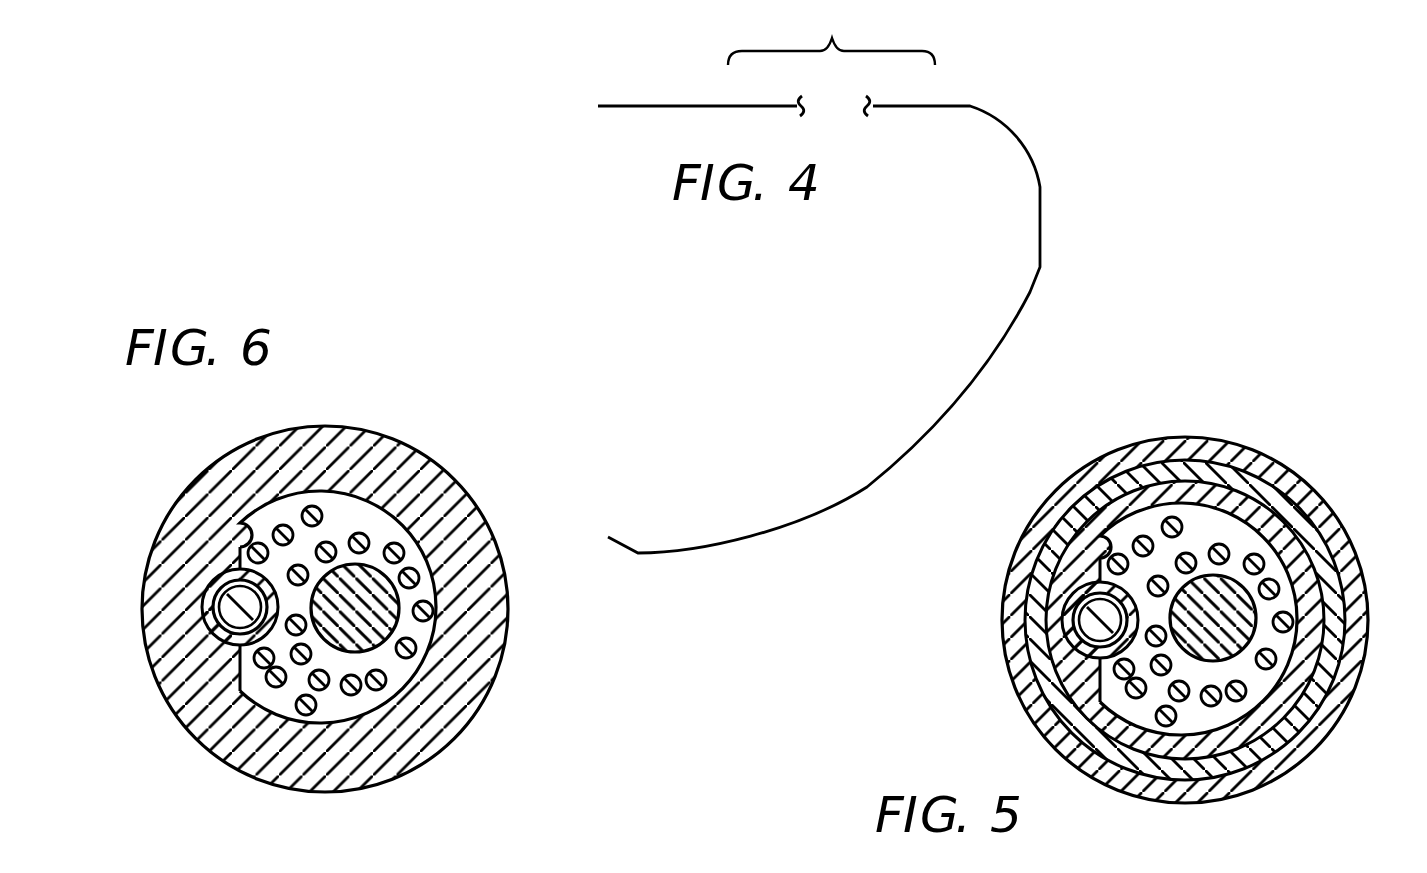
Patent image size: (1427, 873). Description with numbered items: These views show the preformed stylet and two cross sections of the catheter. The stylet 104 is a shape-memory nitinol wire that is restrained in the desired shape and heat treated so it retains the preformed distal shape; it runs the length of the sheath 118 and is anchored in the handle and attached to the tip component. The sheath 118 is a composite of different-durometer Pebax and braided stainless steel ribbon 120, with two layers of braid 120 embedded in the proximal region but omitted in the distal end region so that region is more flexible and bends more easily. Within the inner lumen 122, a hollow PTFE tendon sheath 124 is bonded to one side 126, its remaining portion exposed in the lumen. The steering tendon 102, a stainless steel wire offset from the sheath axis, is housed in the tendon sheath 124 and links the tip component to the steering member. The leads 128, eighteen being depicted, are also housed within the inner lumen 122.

In FIG. 5, the steering tendon 102 is at (1102, 582).
In FIG. 6, the steering tendon 102 is at (242, 569).
In FIG. 4, the stylet 104 is at (628, 106).
In FIG. 5, the stylet 104 is at (1243, 652).
In FIG. 6, the stylet 104 is at (381, 646).
In FIG. 5, the sheath 118 is at (1285, 465).
In FIG. 6, the sheath 118 is at (423, 455).
In FIG. 5, the stainless steel ribbon braid 120 is at (1238, 476).
In FIG. 5, the inner lumen 122 is at (1208, 515).
In FIG. 6, the inner lumen 122 is at (350, 505).
In FIG. 5, the tendon sheath 124 is at (1074, 599).
In FIG. 6, the tendon sheath 124 is at (216, 588).
In FIG. 5, the side of inner lumen 126 is at (1106, 530).
In FIG. 6, the side of inner lumen 126 is at (246, 517).
In FIG. 5, the leads 128 is at (1290, 631).
In FIG. 6, the leads 128 is at (430, 622).